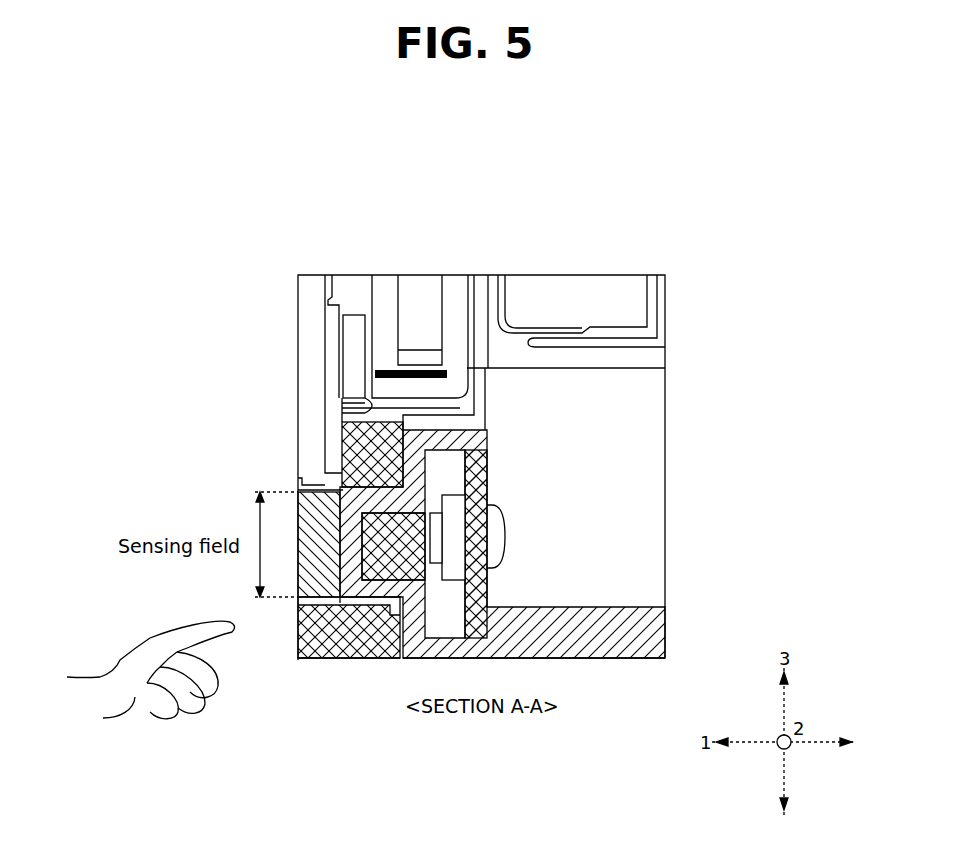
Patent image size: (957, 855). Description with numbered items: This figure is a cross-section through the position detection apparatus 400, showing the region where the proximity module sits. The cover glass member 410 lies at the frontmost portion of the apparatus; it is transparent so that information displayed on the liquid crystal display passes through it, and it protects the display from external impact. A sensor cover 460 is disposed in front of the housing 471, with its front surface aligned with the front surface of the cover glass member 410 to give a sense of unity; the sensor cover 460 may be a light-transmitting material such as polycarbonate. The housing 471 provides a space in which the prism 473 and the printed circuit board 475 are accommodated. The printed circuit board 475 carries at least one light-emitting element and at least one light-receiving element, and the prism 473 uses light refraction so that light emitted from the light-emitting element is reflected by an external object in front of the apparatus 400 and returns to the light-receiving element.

The position detection apparatus 400 is at (342, 218).
The cover glass member 410 is at (320, 443).
The sensor cover 460 is at (320, 577).
The housing 471 is at (465, 440).
The prism 473 is at (398, 548).
The printed circuit board 475 is at (455, 555).